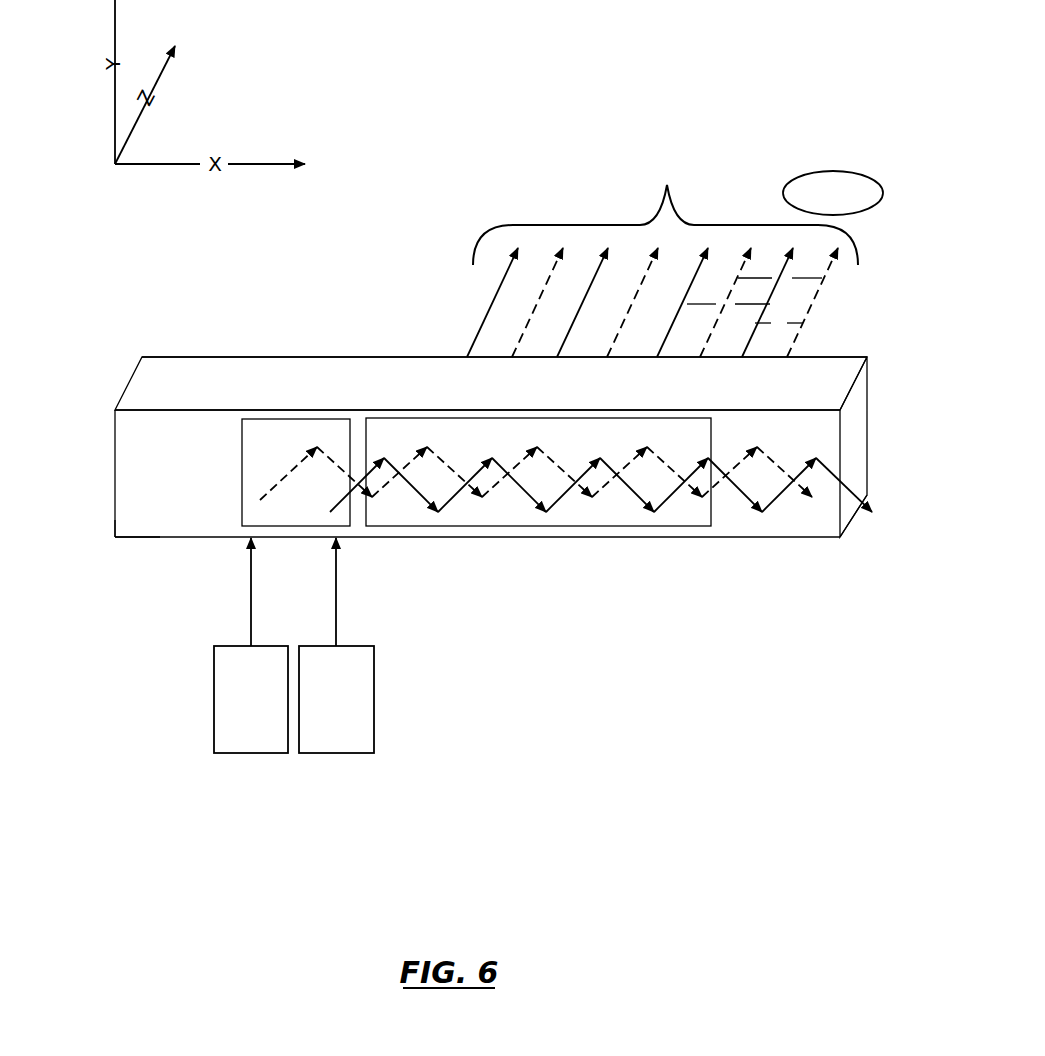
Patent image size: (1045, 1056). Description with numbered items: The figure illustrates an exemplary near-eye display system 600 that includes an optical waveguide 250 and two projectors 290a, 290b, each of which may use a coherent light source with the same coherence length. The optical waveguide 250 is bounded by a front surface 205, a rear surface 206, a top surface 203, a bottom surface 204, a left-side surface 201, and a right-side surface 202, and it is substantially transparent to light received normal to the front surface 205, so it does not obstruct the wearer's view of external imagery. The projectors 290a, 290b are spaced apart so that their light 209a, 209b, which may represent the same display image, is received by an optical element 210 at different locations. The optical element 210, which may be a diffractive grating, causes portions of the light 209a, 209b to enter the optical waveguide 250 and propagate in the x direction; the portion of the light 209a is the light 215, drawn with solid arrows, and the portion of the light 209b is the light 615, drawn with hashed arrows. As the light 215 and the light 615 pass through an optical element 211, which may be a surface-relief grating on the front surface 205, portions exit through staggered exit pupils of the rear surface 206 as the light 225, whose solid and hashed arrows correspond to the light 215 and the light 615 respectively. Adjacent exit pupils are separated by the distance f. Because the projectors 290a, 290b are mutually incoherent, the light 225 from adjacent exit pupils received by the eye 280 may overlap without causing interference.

The left-side surface 201 is at (117, 410).
The right-side surface 202 is at (867, 398).
The top surface 203 is at (298, 374).
The bottom surface 204 is at (658, 537).
The front surface 205 is at (128, 537).
The rear surface 206 is at (223, 356).
The light 209a is at (251, 627).
The light 209b is at (336, 627).
The optical element 210 is at (296, 473).
The optical element 211 is at (538, 472).
The light 215 is at (466, 484).
The light 225 is at (662, 256).
The optical waveguide 250 is at (843, 535).
The eye 280 is at (833, 193).
The projector 290a is at (251, 699).
The projector 290b is at (336, 699).
The light 615 is at (607, 484).
The near-eye display system 600 is at (467, 874).